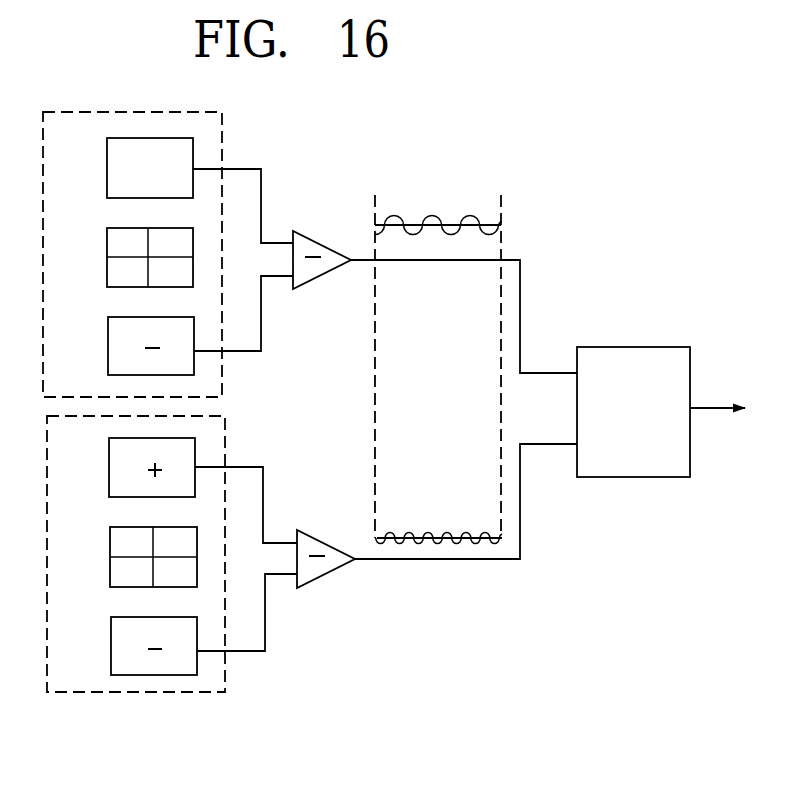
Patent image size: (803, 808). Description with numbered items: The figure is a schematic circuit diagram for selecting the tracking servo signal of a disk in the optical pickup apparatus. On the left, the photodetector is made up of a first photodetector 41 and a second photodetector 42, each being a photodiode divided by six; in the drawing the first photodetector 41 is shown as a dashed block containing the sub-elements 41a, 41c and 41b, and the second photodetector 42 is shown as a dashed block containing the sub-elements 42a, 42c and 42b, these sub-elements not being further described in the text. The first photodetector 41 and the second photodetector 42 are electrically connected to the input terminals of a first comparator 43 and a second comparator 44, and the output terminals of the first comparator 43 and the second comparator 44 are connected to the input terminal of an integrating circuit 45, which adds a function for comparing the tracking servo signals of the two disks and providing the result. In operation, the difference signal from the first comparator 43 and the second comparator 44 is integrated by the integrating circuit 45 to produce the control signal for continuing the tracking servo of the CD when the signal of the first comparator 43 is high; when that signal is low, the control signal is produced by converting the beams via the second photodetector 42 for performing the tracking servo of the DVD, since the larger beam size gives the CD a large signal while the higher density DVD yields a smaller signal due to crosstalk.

The first photodetector 41 is at (222, 120).
The +1 coefficient source 41a is at (107, 182).
The -1 coefficient source 41b is at (108, 330).
The switch 41c is at (107, 273).
The second photodetector 42 is at (223, 431).
The + coefficient source 42a is at (110, 483).
The -1 coefficient source 42b is at (111, 628).
The switch 42c is at (110, 545).
The first comparator 43 is at (323, 246).
The second comparator 44 is at (328, 575).
The integrating circuit 45 is at (599, 347).